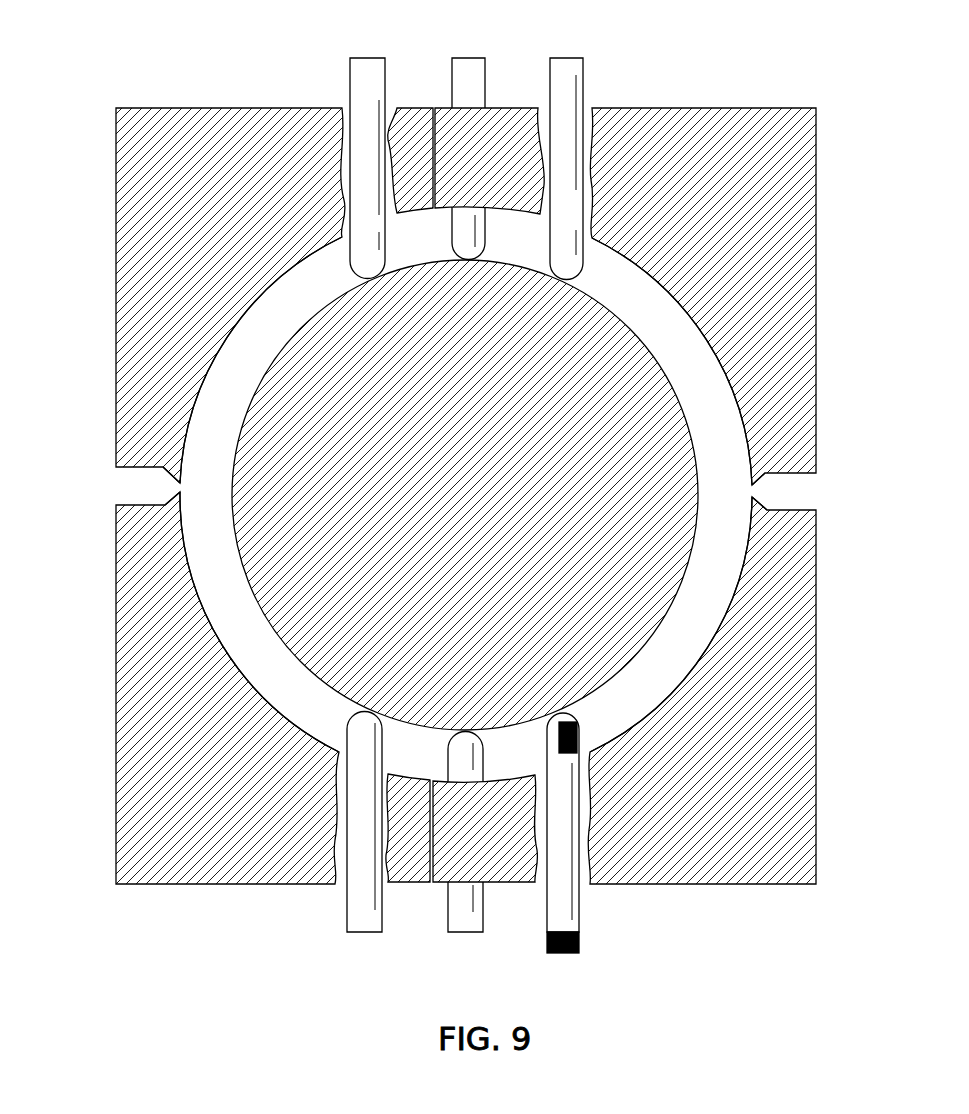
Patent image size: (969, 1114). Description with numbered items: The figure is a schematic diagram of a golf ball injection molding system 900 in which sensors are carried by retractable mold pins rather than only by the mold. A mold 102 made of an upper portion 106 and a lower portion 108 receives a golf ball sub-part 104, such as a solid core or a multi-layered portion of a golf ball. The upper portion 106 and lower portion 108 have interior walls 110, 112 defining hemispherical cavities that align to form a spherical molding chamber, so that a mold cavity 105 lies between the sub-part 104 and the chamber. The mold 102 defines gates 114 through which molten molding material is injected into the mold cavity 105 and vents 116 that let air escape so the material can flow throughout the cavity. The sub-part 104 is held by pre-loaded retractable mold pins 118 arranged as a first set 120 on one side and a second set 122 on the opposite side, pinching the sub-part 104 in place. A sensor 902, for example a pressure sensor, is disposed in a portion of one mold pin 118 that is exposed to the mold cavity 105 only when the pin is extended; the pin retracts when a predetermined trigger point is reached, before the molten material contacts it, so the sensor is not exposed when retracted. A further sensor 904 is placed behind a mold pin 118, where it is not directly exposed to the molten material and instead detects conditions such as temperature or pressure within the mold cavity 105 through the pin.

The system 900 is at (168, 40).
The mold 102 is at (817, 763).
The golf ball sub-part 104 is at (612, 328).
The mold cavity 105 is at (263, 362).
The upper portion 106 is at (811, 362).
The lower portion 108 is at (805, 597).
The interior wall 110 is at (690, 322).
The interior wall 112 is at (712, 642).
The gates 114 is at (117, 485).
The vents 116 is at (433, 107).
The mold pins 118 is at (467, 58).
The first set of mold pins 120 is at (628, 61).
The second set of mold pins 122 is at (318, 938).
The sensor 902 is at (581, 733).
The sensor 904 is at (563, 953).